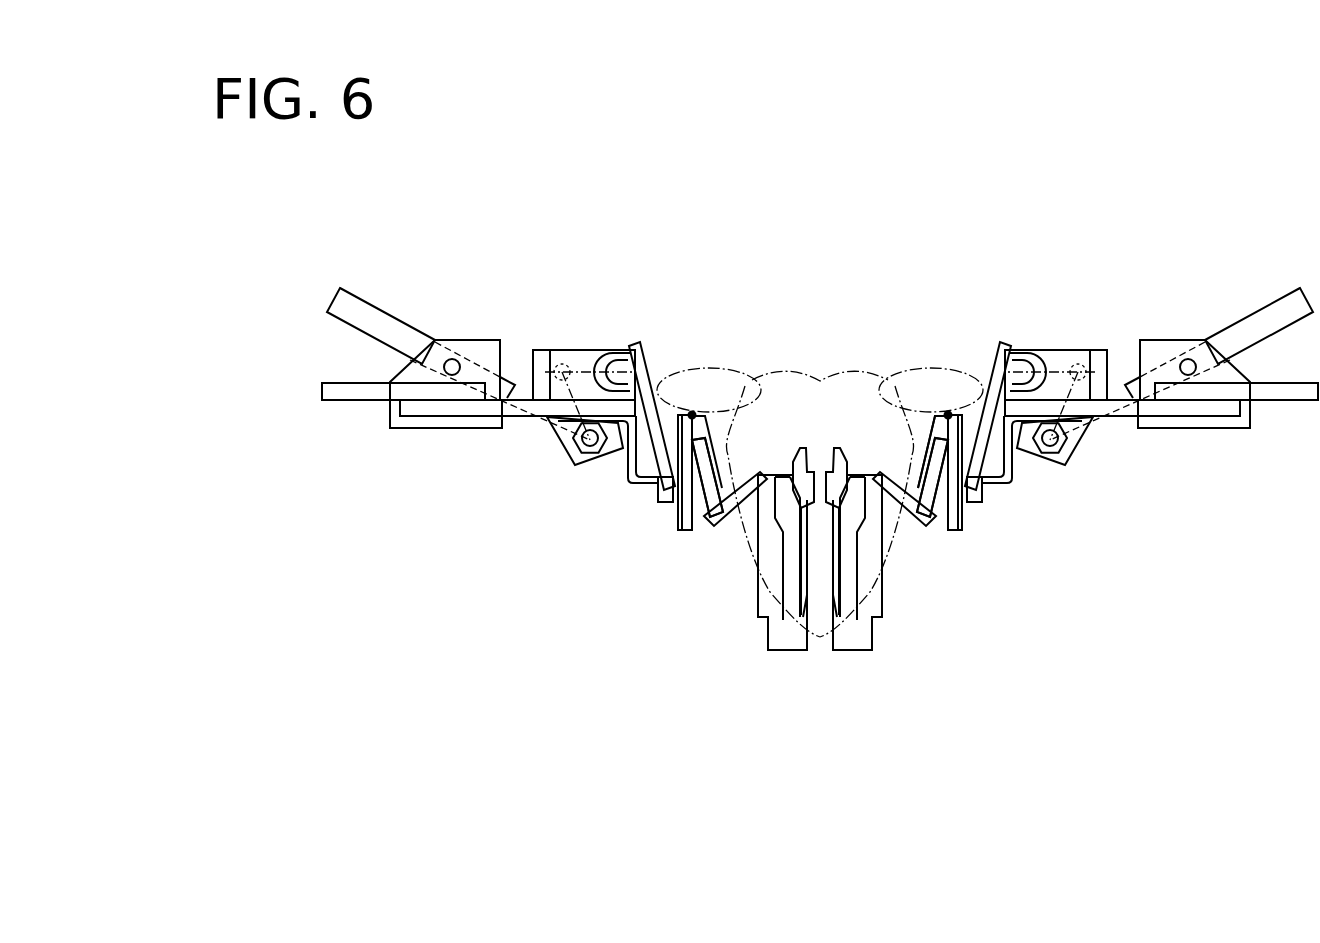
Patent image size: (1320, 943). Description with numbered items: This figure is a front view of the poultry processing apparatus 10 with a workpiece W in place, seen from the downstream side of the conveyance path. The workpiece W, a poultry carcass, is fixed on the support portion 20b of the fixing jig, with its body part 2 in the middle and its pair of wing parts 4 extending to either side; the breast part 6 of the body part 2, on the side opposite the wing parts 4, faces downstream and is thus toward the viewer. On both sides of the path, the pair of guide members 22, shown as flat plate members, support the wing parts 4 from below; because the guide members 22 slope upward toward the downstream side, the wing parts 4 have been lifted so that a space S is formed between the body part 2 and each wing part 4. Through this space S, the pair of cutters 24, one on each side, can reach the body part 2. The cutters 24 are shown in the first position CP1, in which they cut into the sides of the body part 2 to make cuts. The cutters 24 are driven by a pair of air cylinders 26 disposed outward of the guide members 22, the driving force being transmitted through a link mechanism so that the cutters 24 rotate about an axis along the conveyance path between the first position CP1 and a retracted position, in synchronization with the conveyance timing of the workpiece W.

The poultry processing apparatus 10 is at (1192, 232).
The body part 2 is at (808, 372).
The wing parts 4 is at (687, 368).
The breast part 6 is at (803, 648).
The support portion 20b is at (884, 630).
The guide members 22 is at (683, 531).
The cutters 24 is at (736, 520).
The air cylinders 26 is at (405, 318).
The space S is at (690, 436).
The workpiece W is at (884, 363).
The first position CP1 is at (996, 549).